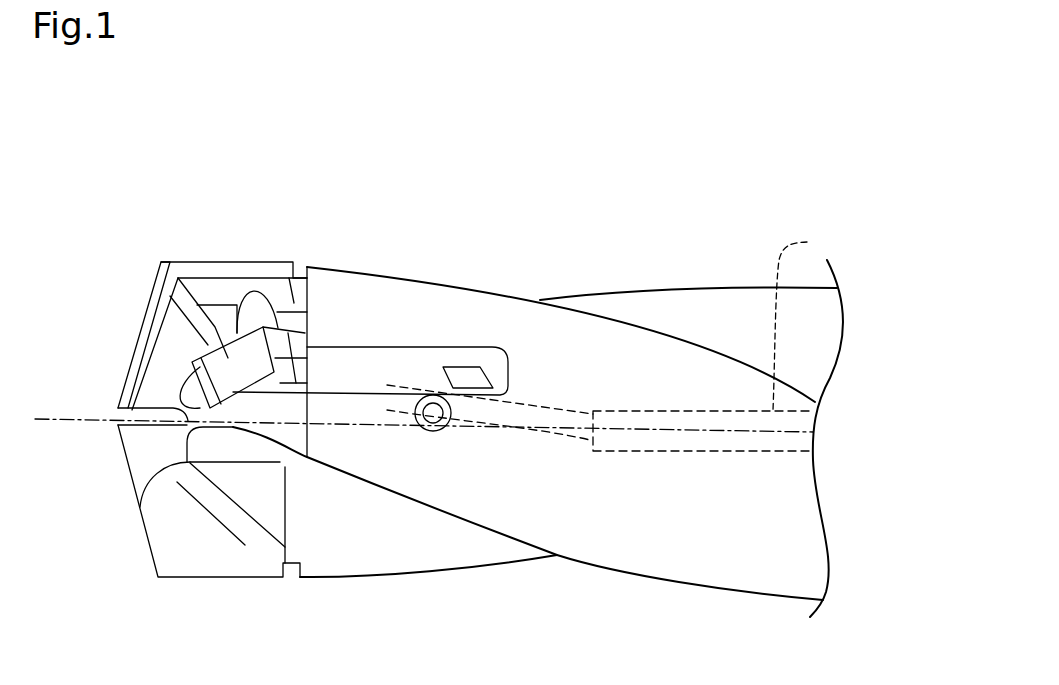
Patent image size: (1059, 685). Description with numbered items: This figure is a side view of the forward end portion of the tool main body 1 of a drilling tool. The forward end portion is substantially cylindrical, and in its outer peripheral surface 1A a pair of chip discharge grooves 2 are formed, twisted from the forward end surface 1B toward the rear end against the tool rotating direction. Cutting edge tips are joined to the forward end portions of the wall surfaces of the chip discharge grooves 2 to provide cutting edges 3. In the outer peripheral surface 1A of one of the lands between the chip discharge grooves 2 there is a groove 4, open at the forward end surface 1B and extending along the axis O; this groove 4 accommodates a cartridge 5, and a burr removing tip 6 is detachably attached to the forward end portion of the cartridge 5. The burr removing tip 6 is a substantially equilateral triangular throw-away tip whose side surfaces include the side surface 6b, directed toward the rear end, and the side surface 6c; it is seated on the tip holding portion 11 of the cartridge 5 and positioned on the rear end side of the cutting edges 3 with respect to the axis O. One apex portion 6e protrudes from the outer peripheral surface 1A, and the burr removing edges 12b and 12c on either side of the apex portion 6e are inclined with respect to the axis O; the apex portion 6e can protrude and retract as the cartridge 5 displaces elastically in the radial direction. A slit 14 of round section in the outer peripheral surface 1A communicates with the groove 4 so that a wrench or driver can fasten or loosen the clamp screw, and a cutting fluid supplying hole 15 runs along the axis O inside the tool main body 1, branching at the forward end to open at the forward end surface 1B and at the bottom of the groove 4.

The tool main body 1 is at (549, 277).
The outer peripheral surface 1A is at (520, 322).
The forward end surface 1B is at (160, 390).
The chip discharge grooves 2 is at (695, 336).
The cutting edges 3 is at (137, 350).
The groove 4 is at (397, 324).
The cartridge 5 is at (417, 367).
The burr removing tip 6 is at (280, 348).
The side surface 6b is at (305, 355).
The side surface 6c is at (190, 343).
The apex portion 6e is at (294, 323).
The tip holding portion 11 is at (263, 368).
The burr removing edge 12b is at (335, 338).
The burr removing edge 12c is at (230, 358).
The slit 14 is at (261, 302).
The cutting fluid supplying hole 15 is at (161, 358).
The axis O is at (78, 424).